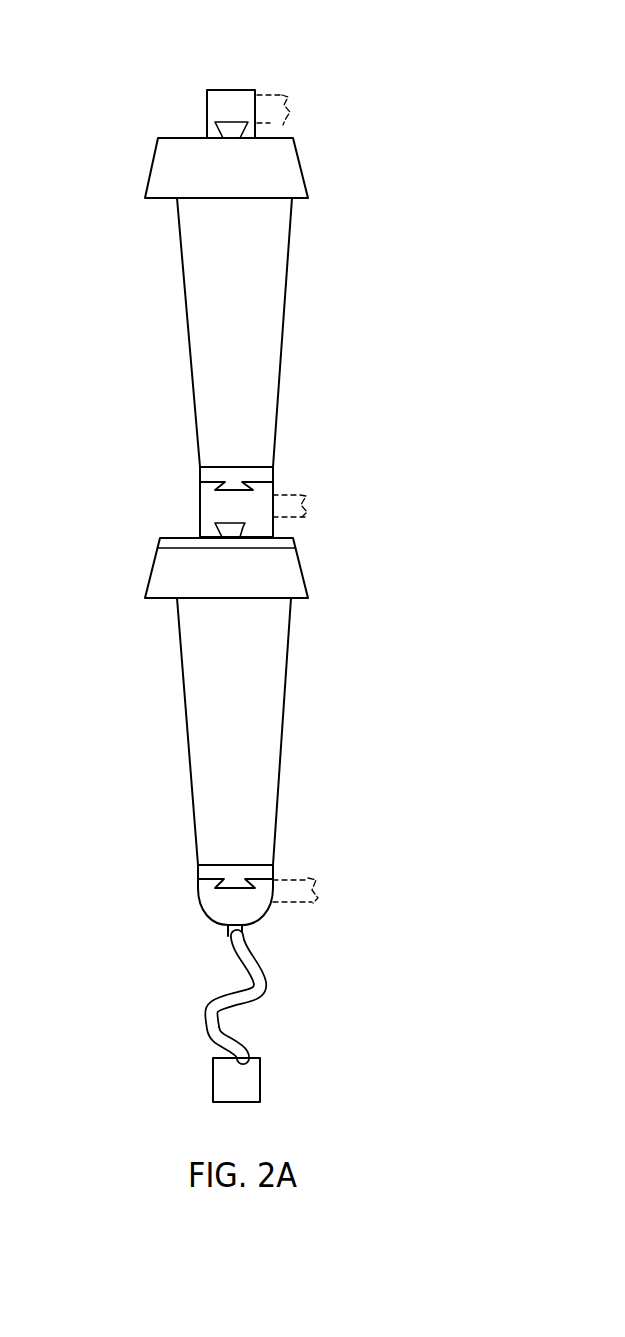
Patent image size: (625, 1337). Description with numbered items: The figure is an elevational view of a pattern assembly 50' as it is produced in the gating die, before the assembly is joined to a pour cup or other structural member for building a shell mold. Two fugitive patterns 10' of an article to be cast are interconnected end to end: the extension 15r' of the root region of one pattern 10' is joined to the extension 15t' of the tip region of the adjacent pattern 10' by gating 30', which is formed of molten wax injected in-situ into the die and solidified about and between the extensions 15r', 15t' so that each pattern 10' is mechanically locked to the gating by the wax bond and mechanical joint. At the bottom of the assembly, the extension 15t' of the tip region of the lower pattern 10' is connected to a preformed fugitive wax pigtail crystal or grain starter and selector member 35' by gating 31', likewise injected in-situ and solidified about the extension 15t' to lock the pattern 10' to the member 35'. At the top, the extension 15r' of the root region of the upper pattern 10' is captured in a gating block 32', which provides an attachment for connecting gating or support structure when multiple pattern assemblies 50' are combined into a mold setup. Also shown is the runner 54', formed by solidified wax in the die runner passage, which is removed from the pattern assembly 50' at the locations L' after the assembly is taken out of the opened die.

The pattern assembly 50' is at (247, 566).
The gating block 32' is at (255, 84).
The fugitive pattern 10' is at (290, 531).
The gating 30' is at (284, 485).
The extension of the tip region 15t' is at (185, 454).
The extension of the root region 15r' is at (147, 522).
The gating 31' is at (299, 904).
The pigtail crystal or grain starter and selector member 35' is at (299, 1078).
The locations L' is at (321, 463).
The runner 54' is at (349, 499).